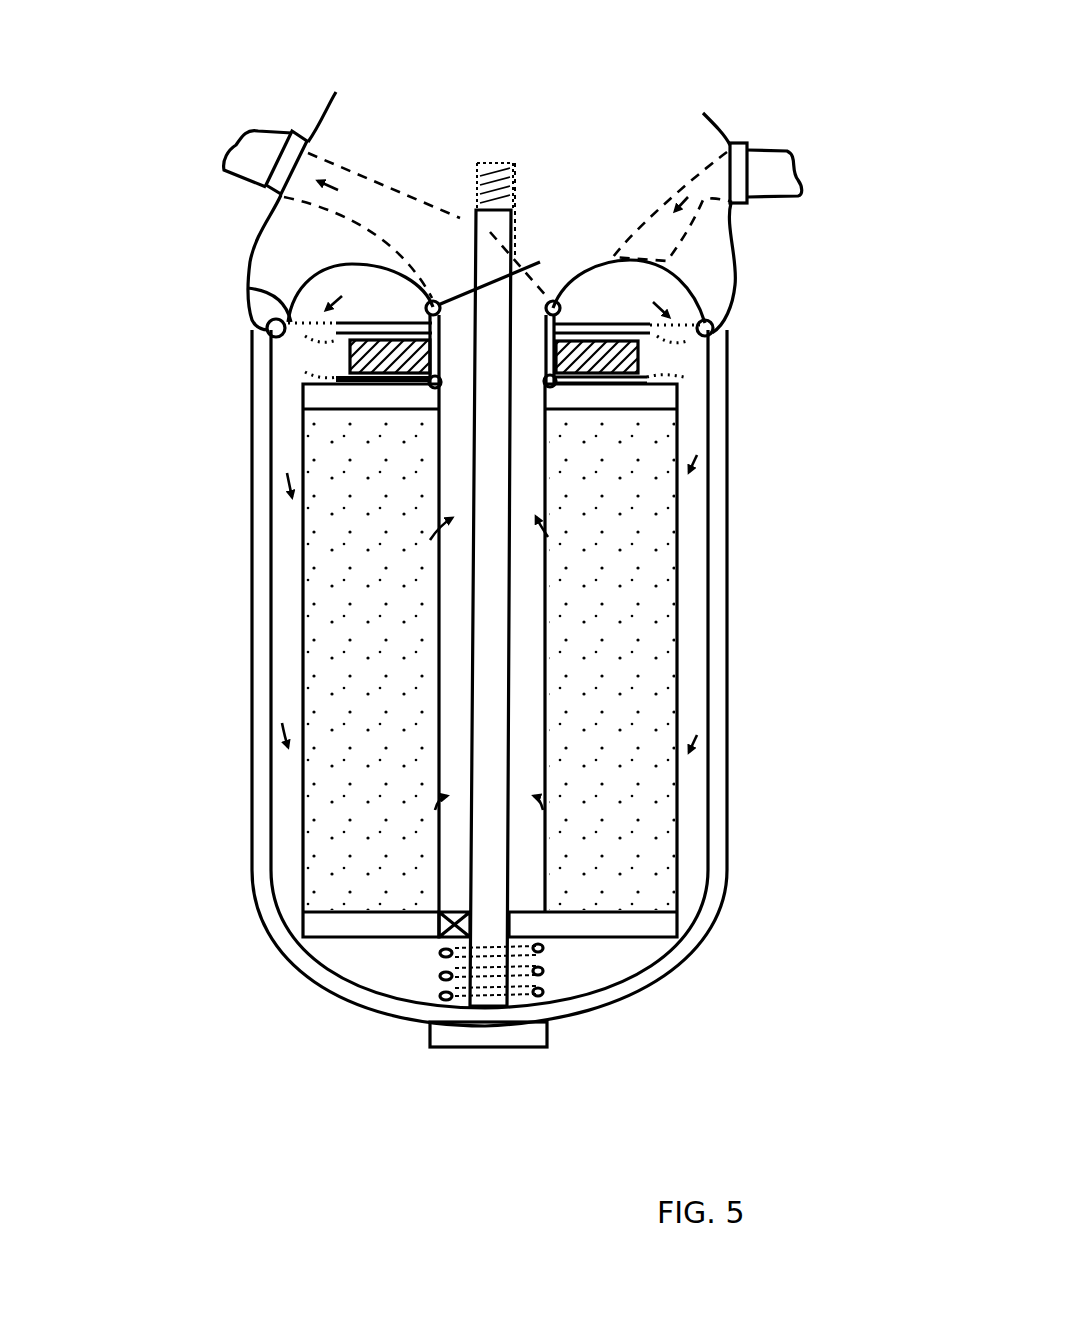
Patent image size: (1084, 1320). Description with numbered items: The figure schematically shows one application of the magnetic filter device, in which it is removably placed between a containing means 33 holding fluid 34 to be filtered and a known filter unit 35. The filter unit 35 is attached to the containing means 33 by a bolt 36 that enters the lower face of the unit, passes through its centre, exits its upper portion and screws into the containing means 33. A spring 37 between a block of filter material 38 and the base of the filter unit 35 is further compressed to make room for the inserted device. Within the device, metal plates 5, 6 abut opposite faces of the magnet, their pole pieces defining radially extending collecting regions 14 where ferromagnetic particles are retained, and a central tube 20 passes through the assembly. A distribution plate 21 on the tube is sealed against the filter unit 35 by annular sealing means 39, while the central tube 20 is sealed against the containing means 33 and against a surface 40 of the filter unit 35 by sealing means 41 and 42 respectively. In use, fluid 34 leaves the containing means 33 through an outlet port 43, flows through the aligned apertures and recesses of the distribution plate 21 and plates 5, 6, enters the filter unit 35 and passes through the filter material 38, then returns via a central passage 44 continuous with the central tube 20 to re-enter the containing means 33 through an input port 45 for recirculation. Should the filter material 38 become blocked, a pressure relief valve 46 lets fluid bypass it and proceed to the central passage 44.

The metal plate 5 is at (345, 347).
The metal plate 6 is at (338, 382).
The collecting regions 14 is at (690, 363).
The central tube 20 is at (557, 330).
The distribution plate 21 is at (247, 288).
The containing means 33 is at (336, 92).
The fluid 34 is at (398, 200).
The filter unit 35 is at (253, 658).
The bolt 36 is at (497, 222).
The spring 37 is at (543, 967).
The filter material 38 is at (652, 647).
The annular sealing means 39 is at (268, 331).
The surface 40 is at (647, 377).
The sealing means 41 is at (553, 301).
The sealing means 42 is at (441, 386).
The outlet port 43 is at (760, 153).
The central passage 44 is at (527, 863).
The input port 45 is at (258, 131).
The pressure relief valve 46 is at (435, 938).